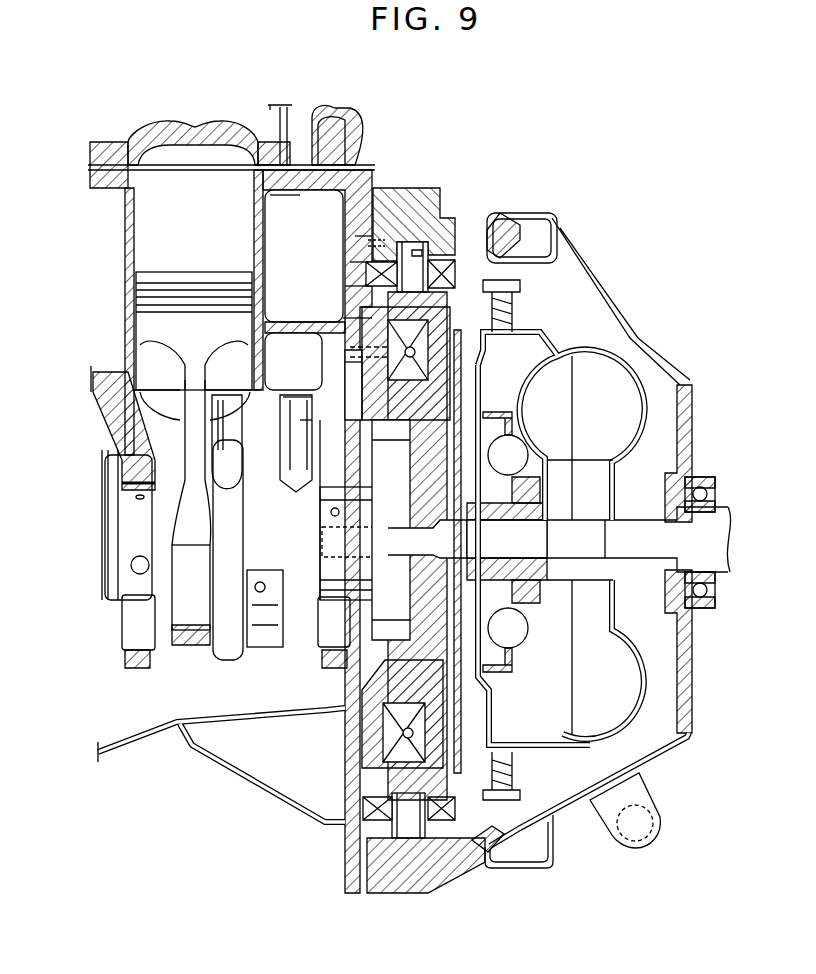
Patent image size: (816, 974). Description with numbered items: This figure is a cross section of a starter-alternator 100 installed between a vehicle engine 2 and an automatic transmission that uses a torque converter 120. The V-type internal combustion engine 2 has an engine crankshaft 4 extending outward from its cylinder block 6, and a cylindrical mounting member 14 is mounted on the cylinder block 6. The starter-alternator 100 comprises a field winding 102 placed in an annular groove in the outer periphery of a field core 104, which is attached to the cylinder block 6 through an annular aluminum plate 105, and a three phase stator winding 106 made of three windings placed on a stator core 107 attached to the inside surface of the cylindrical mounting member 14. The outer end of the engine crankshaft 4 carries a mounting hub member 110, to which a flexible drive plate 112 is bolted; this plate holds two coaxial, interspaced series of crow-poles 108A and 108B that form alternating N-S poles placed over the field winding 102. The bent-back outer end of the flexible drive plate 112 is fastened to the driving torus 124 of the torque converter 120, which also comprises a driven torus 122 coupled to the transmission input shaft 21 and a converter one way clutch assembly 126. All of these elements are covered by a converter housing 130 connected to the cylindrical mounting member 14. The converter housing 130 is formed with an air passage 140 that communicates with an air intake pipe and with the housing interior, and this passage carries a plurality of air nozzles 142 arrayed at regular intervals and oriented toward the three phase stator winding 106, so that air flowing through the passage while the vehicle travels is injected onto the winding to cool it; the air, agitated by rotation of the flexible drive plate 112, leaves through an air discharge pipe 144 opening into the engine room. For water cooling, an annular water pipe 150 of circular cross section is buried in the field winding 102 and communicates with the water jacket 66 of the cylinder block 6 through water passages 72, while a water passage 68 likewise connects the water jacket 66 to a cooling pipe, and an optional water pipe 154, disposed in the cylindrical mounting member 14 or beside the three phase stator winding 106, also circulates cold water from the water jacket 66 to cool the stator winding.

The V-type internal combustion engine 2 is at (98, 243).
The engine crankshaft 4 is at (312, 600).
The cylinder block 6 is at (327, 172).
The cylindrical mounting member 14 is at (404, 200).
The transmission input shaft 21 is at (712, 553).
The water jacket 66 is at (294, 272).
The water passage 68 is at (358, 236).
The water passage 72 is at (340, 352).
The starter-alternator 100 is at (352, 262).
The field winding 102 is at (318, 394).
The field core 104 is at (345, 318).
The annular aluminum plate 105 is at (347, 366).
The three phase stator winding 106 is at (440, 258).
The stator core 107 is at (420, 240).
The crow-poles 108A is at (422, 245).
The crow-poles 108B is at (346, 288).
The mounting hub member 110 is at (333, 514).
The flexible drive plate 112 is at (335, 426).
The torque converter 120 is at (542, 330).
The driven torus 122 is at (556, 352).
The driving torus 124 is at (640, 338).
The converter one way clutch assembly 126 is at (512, 405).
The converter housing 130 is at (680, 385).
The air passage 140 is at (542, 230).
The air nozzles 142 is at (503, 214).
The air discharge pipe 144 is at (655, 798).
The annular water pipe 150 is at (414, 352).
The water pipe 154 is at (365, 243).